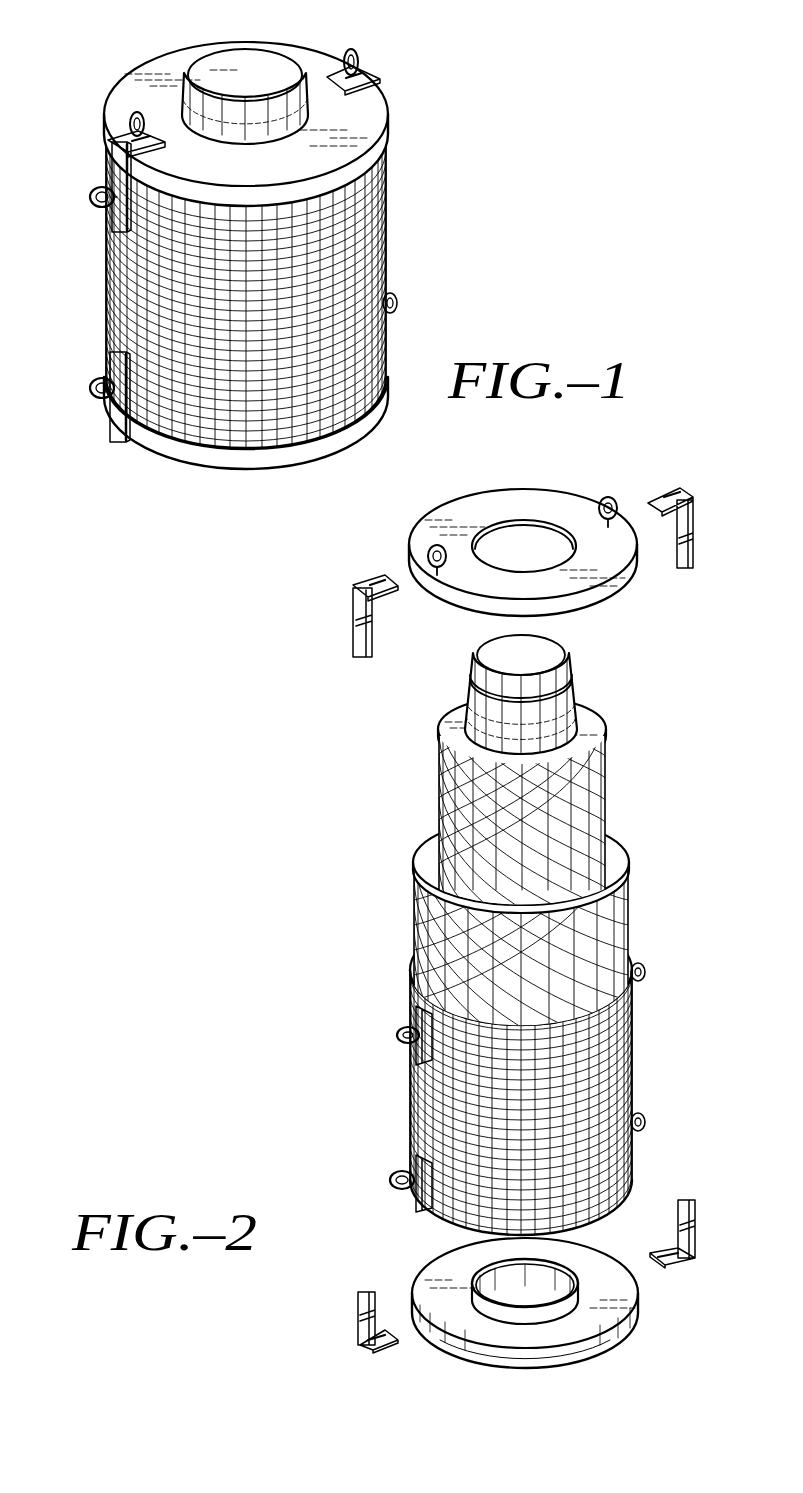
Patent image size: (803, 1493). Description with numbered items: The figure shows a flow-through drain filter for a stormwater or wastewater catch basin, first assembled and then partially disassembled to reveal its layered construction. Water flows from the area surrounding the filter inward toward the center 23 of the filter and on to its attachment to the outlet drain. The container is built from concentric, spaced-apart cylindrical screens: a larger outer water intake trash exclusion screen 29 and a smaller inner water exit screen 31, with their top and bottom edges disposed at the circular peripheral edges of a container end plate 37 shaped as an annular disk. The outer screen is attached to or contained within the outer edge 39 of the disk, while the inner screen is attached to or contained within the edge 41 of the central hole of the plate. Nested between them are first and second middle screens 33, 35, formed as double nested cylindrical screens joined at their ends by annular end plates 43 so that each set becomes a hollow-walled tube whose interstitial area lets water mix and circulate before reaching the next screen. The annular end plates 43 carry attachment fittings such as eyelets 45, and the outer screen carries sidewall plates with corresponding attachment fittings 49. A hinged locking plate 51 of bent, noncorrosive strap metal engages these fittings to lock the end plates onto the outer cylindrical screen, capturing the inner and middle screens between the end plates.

In FIG. 1, the center 23 is at (247, 65).
In FIG. 2, the center 23 is at (537, 655).
In FIG. 1, the water intake trash exclusion screen 29 is at (386, 250).
In FIG. 2, the water intake trash exclusion screen 29 is at (633, 1065).
In FIG. 2, the water exit screen 31 is at (560, 707).
In FIG. 2, the first middle screen 33 is at (630, 918).
In FIG. 2, the second middle screen 35 is at (604, 798).
In FIG. 1, the container end plate 37 is at (365, 107).
In FIG. 2, the container end plate 37 is at (556, 500).
In FIG. 2, the outer edge 39 is at (465, 1352).
In FIG. 2, the edge of the central hole 41 is at (572, 1320).
In FIG. 2, the annular end plate 43 is at (457, 735).
In FIG. 1, the eyelet 45 is at (128, 118).
In FIG. 2, the eyelet 45 is at (430, 551).
In FIG. 1, the attachment fitting 49 is at (90, 196).
In FIG. 2, the attachment fitting 49 is at (397, 1035).
In FIG. 2, the hinged locking plate 51 is at (358, 607).